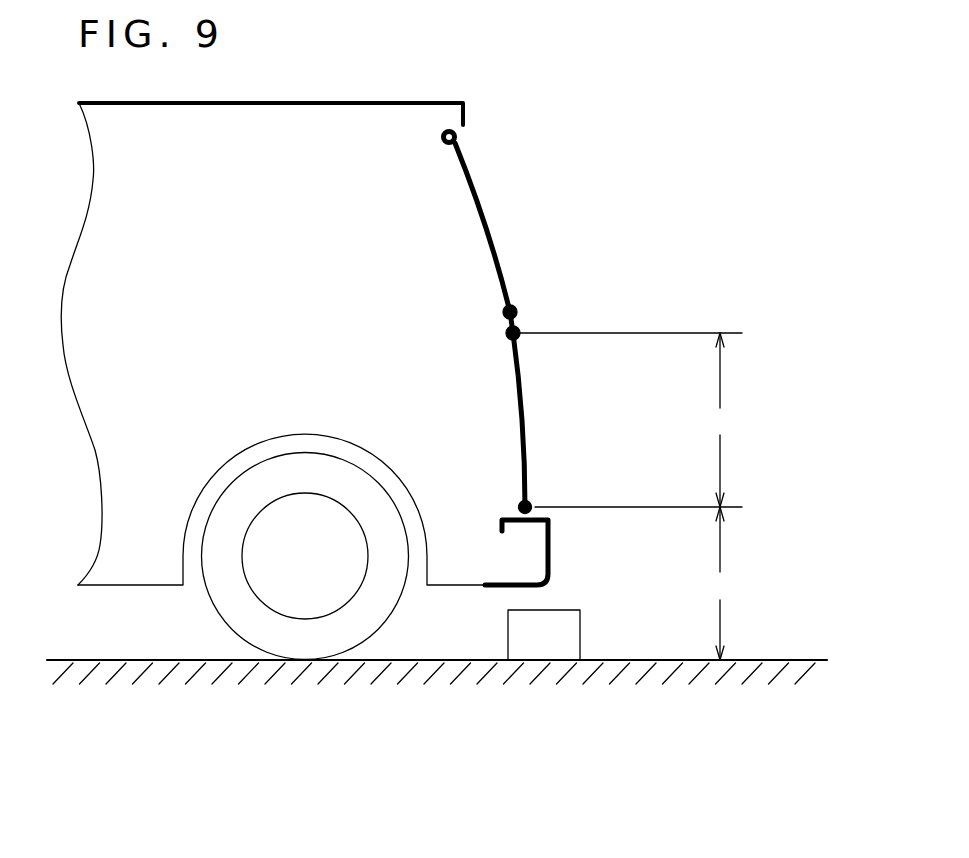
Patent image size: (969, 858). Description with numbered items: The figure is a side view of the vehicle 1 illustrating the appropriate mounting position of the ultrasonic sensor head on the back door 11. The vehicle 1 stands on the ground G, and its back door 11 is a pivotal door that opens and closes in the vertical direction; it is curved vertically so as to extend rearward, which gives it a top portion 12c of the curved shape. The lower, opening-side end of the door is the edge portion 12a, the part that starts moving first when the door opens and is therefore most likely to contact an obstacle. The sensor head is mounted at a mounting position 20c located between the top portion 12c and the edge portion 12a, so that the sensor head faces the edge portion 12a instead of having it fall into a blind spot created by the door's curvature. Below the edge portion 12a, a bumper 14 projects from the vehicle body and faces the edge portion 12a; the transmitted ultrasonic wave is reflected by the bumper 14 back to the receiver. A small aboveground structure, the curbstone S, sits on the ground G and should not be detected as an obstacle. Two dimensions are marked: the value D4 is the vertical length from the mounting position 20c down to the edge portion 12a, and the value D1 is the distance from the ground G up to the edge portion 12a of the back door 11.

The vehicle 1 is at (622, 192).
The back door 11 is at (490, 217).
The top portion of the curved shape of the back door 12c is at (516, 308).
The mounting position 20c is at (507, 333).
The edge portion 12a is at (529, 499).
The bumper 14 is at (553, 552).
The curbstone S is at (565, 622).
The ground G is at (783, 660).
The value D4 is at (630, 420).
The value D1 is at (718, 583).